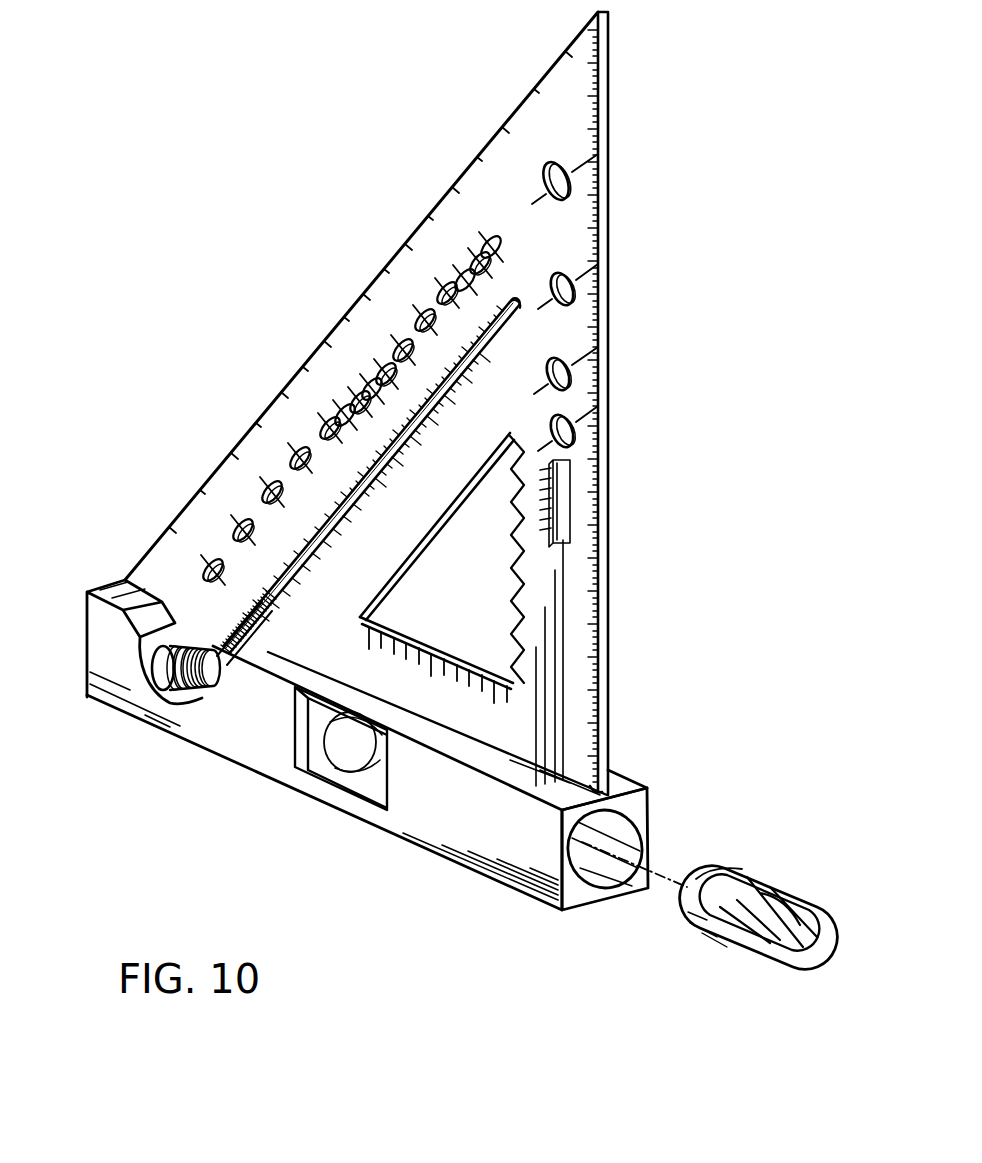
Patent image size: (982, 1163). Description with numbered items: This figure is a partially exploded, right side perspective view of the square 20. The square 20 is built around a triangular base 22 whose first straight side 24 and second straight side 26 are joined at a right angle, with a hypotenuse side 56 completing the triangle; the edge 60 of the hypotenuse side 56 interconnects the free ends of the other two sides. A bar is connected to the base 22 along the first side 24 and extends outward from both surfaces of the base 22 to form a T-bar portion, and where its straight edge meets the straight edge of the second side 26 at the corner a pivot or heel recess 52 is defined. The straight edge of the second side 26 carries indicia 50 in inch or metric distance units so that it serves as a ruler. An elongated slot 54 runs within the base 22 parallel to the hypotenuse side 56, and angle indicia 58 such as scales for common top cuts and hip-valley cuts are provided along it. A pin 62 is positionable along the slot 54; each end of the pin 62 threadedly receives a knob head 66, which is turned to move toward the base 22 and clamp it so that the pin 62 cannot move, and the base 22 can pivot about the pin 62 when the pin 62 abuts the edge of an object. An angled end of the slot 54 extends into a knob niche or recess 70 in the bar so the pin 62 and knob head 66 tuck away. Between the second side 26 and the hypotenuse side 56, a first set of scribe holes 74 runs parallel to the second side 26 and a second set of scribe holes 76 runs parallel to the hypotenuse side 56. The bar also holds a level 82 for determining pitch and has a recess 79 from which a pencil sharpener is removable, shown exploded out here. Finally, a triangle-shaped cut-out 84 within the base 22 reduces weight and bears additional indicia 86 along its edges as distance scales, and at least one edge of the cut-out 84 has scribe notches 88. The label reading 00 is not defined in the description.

The square 20 is at (334, 248).
The triangular base 22 is at (477, 157).
The first straight side 24 is at (472, 740).
The second straight side 26 is at (612, 215).
The indicia 50 is at (590, 231).
The pivot or heel recess 52 is at (647, 812).
The elongated slot 54 is at (503, 340).
The hypotenuse side 56 is at (242, 437).
The angle indicia 58 is at (503, 287).
The edge of the hypotenuse side 60 is at (298, 370).
The pin 62 is at (217, 685).
The knob head 66 is at (154, 688).
The knob niche or recess 70 is at (137, 660).
The first set of scribe holes 74 is at (573, 172).
The second set of scribe holes 76 is at (345, 328).
The recess 79 is at (613, 892).
The level 82 is at (353, 768).
The triangle-shaped cut-out 84 is at (410, 634).
The additional indicia 86 is at (362, 627).
The scribe notches 88 is at (513, 545).
The end cap 00 is at (740, 873).